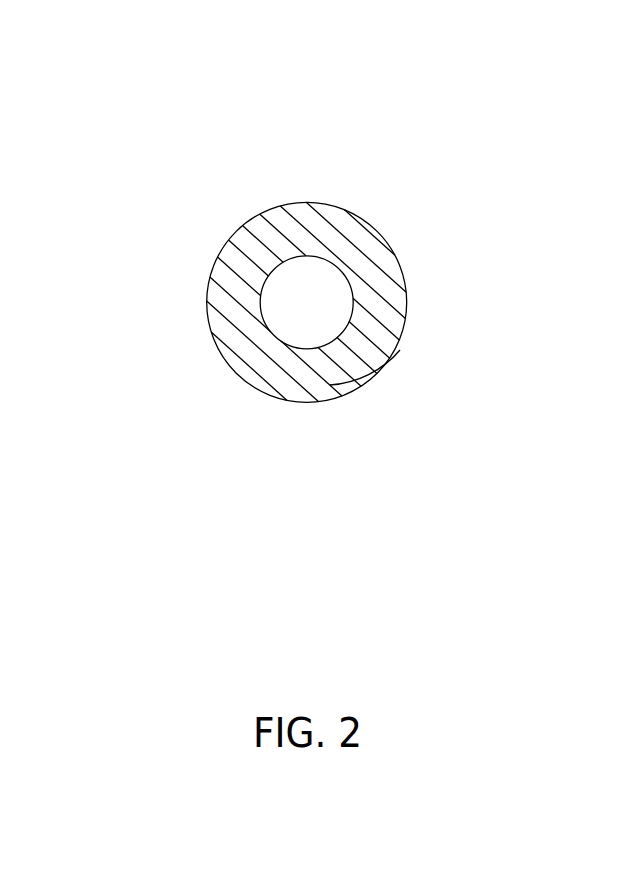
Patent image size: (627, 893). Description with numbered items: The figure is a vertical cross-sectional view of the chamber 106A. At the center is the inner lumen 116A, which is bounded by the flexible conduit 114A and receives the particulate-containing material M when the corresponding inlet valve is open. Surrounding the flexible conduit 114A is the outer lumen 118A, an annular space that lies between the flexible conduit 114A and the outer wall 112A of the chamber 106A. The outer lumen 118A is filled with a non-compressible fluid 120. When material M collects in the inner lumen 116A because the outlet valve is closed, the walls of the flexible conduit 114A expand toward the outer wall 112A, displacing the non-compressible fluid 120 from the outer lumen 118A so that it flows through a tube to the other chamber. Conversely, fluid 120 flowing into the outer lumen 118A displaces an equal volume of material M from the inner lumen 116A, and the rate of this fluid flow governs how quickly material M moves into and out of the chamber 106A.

The chamber 106A is at (303, 238).
The outer wall 112A is at (357, 217).
The flexible conduit 114A is at (260, 293).
The inner lumen 116A is at (330, 294).
The outer lumen 118A is at (250, 347).
The non-compressible fluid 120 is at (360, 360).